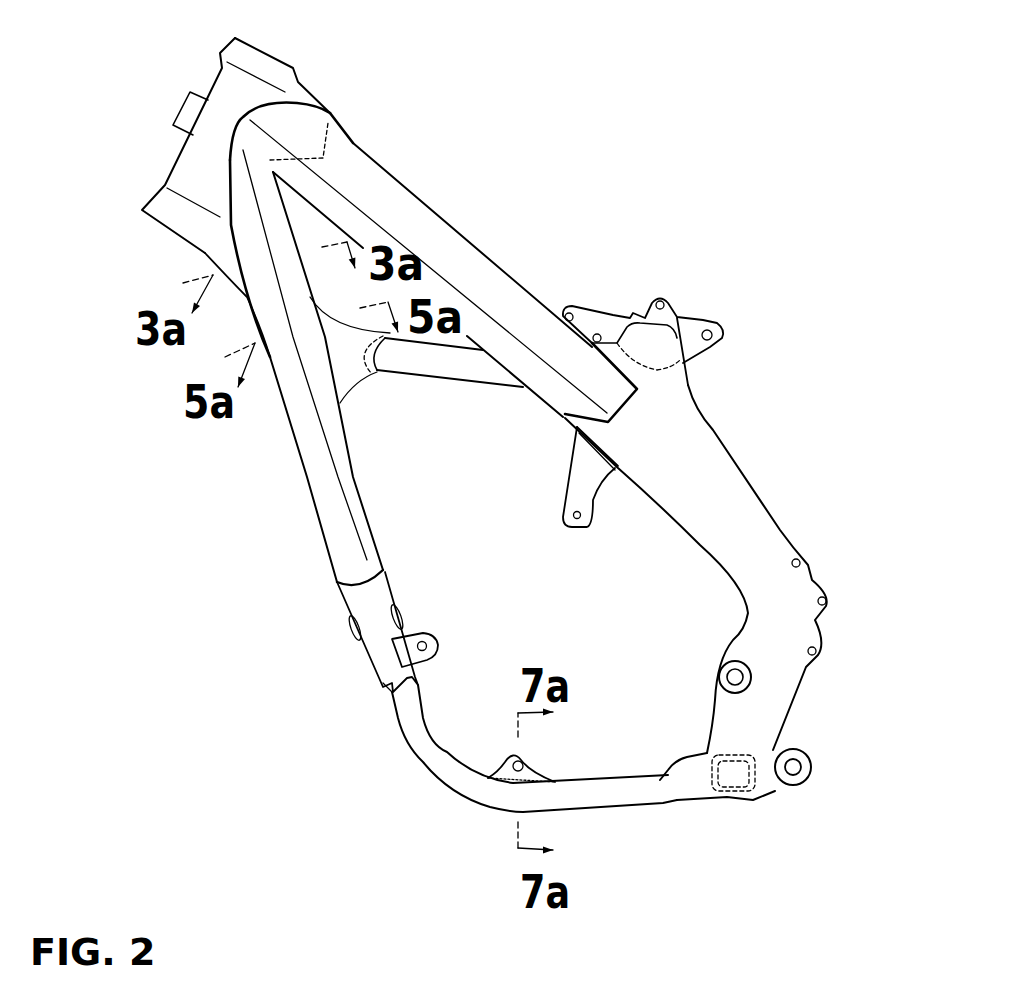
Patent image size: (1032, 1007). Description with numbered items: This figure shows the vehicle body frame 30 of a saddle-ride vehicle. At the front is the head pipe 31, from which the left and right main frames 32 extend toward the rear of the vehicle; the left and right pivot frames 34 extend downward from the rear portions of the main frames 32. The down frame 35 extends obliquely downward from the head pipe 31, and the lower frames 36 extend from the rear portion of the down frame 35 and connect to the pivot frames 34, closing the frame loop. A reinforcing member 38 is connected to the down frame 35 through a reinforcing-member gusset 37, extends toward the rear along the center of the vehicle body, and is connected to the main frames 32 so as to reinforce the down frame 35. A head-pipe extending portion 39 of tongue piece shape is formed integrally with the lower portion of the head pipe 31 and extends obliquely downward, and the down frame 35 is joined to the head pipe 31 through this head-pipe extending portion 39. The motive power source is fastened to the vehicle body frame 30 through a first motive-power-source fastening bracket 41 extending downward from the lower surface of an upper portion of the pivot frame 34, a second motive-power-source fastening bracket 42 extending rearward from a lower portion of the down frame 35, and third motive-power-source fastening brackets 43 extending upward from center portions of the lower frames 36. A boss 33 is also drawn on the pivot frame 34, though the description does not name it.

The vehicle body frame 30 is at (288, 572).
The head pipe 31 is at (225, 97).
The main frames 32 is at (465, 237).
The pivot boss 33 is at (718, 680).
The pivot frames 34 is at (703, 477).
The down frame 35 is at (305, 442).
The lower frames 36 is at (478, 793).
The reinforcing-member gusset 37 is at (350, 378).
The reinforcing member 38 is at (467, 363).
The head-pipe extending portion 39 is at (230, 252).
The first motive-power-source fastening bracket 41 is at (593, 497).
The second motive-power-source fastening bracket 42 is at (428, 636).
The third motive-power-source fastening brackets 43 is at (528, 773).